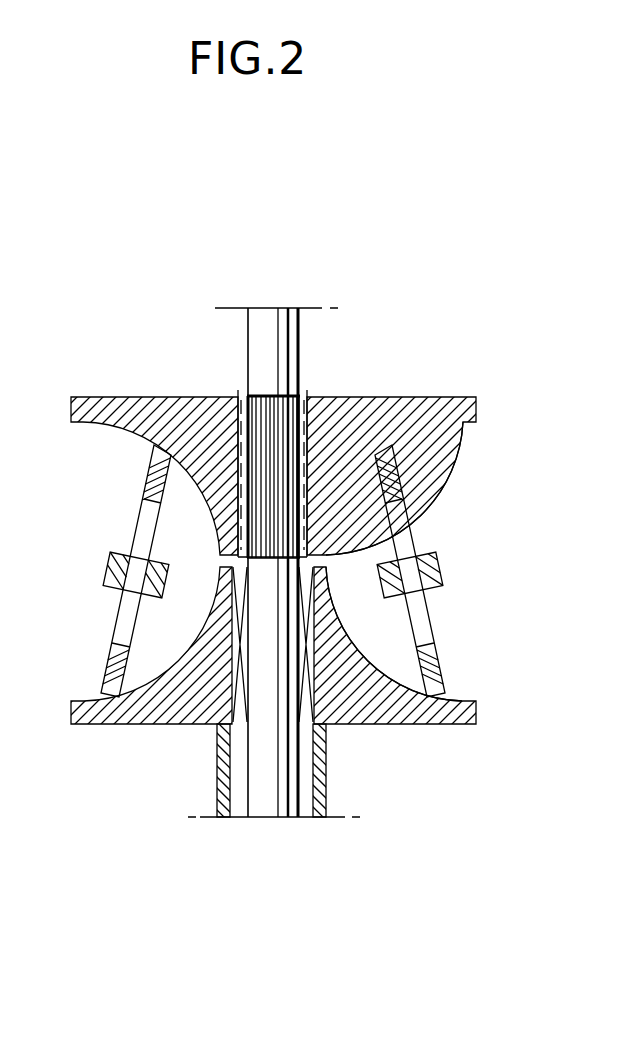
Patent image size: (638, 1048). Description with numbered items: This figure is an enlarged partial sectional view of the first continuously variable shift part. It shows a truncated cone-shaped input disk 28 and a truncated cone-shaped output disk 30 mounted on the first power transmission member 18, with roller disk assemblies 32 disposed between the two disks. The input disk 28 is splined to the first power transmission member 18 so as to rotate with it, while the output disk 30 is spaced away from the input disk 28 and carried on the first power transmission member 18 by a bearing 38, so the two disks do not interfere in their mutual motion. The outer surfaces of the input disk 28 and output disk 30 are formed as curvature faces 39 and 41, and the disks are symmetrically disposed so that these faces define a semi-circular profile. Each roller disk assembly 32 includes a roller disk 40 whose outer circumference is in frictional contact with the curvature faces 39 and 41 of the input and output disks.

The first power transmission member 18 is at (248, 352).
The input disk 28 is at (425, 398).
The output disk 30 is at (422, 724).
The roller disk assembly 32 is at (455, 565).
The bearing 38 is at (330, 728).
The curvature face 39 is at (436, 424).
The roller disk 40 is at (430, 623).
The curvature face 41 is at (452, 700).